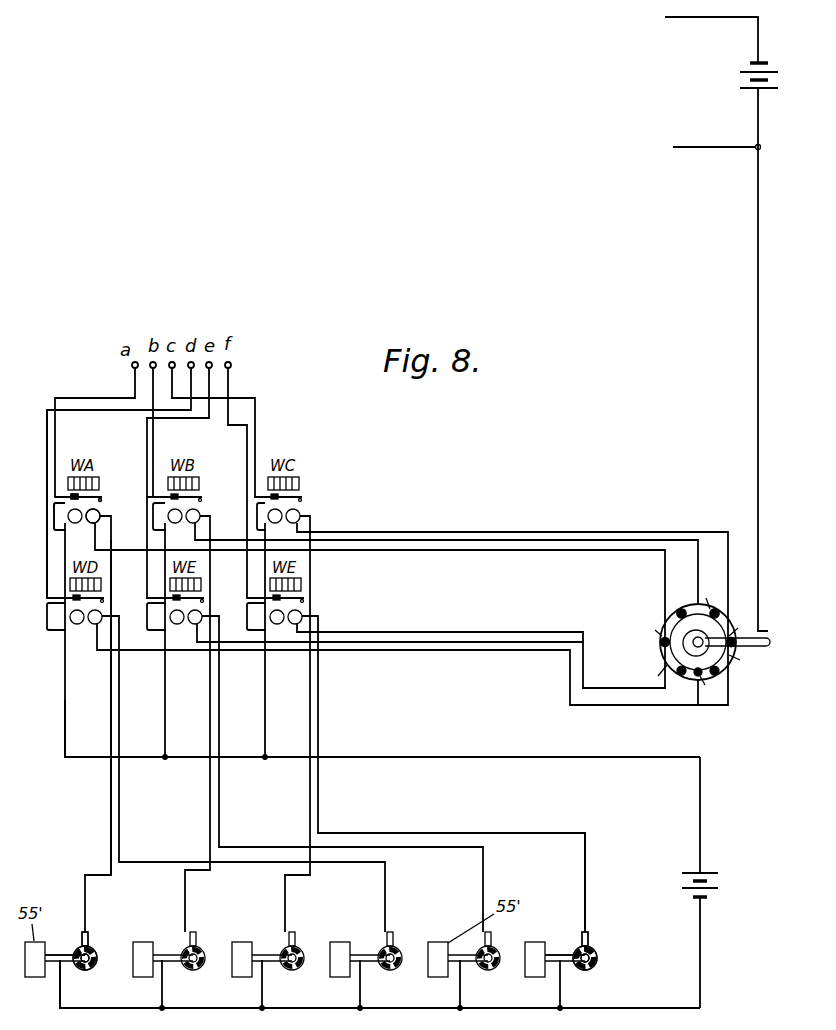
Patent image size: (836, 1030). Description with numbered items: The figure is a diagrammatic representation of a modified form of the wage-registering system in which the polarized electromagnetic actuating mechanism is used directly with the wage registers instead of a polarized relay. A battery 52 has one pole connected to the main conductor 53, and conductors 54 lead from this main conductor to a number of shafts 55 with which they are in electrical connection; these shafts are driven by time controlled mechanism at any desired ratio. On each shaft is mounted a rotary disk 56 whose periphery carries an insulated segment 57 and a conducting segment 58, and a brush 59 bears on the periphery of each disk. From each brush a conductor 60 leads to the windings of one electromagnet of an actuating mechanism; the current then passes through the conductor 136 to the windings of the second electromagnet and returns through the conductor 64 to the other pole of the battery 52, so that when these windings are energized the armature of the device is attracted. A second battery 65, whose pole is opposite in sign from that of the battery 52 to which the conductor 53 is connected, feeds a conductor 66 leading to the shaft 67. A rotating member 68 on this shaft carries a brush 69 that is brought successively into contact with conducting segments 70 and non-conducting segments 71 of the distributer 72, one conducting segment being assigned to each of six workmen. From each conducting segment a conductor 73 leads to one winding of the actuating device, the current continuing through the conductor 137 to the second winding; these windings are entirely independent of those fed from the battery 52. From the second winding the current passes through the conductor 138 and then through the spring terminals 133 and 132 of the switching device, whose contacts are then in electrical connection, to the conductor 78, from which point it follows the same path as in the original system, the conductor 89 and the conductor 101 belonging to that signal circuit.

The conductor 89 is at (677, 17).
The battery 65 is at (748, 79).
The conductor 101 is at (694, 149).
The conductor 66 is at (745, 359).
The conductor 78 is at (48, 434).
The spring terminal 132 is at (70, 497).
The spring terminal 133 is at (68, 513).
The conductor 138 is at (56, 518).
The conductor 137 is at (101, 504).
The conductor 136 is at (90, 524).
The conductor 60 is at (111, 540).
The conductor 64 is at (65, 692).
The conductor 73 is at (430, 550).
The rotating member 68 is at (672, 648).
The brush 69 is at (681, 610).
The conducting segment 70 is at (722, 607).
The non-conducting segment 71 is at (720, 616).
The distributer 72 is at (698, 680).
The shaft 67 is at (771, 638).
The battery 52 is at (712, 886).
The shaft 55 is at (60, 956).
The rotary disk 56 is at (96, 951).
The insulated segment 57 is at (97, 959).
The conducting segment 58 is at (89, 968).
The brush 59 is at (87, 937).
The conductor 54 is at (61, 996).
The conductor 53 is at (405, 1008).